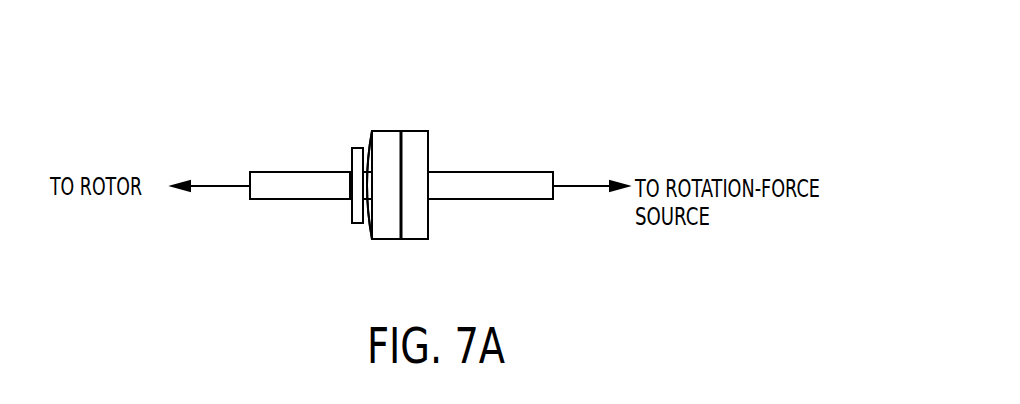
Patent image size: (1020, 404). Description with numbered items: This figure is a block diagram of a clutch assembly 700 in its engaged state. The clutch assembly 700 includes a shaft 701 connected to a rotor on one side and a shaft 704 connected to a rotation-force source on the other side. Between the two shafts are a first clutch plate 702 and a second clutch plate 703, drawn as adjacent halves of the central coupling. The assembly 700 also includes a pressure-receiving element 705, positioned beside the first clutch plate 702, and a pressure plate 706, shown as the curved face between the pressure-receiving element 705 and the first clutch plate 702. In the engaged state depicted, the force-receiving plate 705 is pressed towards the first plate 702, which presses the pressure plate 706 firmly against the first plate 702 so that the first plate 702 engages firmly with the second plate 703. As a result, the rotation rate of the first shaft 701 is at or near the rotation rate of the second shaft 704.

The clutch assembly 700 is at (494, 68).
The shaft 701 is at (308, 185).
The first clutch plate 702 is at (390, 140).
The second clutch plate 703 is at (415, 140).
The shaft 704 is at (495, 183).
The pressure-receiving element 705 is at (360, 207).
The pressure plate 706 is at (370, 235).